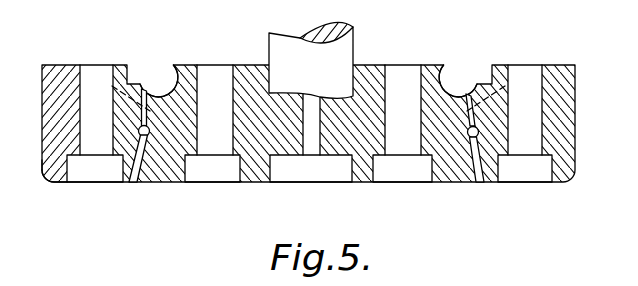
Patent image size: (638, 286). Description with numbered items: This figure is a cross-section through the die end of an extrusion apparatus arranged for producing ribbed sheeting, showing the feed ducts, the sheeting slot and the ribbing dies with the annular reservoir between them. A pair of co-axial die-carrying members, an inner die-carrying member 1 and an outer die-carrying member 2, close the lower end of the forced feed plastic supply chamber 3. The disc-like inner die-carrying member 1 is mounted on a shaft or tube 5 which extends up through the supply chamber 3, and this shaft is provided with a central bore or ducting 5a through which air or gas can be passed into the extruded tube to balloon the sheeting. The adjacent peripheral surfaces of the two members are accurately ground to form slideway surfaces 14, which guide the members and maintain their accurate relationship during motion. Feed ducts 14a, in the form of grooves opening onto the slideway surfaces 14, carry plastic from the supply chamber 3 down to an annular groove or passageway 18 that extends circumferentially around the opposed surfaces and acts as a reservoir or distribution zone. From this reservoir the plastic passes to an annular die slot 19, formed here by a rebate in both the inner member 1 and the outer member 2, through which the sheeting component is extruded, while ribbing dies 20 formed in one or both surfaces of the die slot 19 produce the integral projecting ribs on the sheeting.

The inner die-carrying member 1 is at (250, 174).
The outer die-carrying member 2 is at (53, 176).
The forced feed plastic supply chamber 3 is at (161, 84).
The shaft or tube 5 is at (275, 53).
The central bore or ducting 5a is at (307, 147).
The slideway surfaces 14 is at (146, 113).
The feed ducts 14a is at (140, 92).
The annular groove or passageway 18 is at (139, 133).
The annular die slot 19 is at (143, 186).
The ribbing dies 20 is at (134, 176).